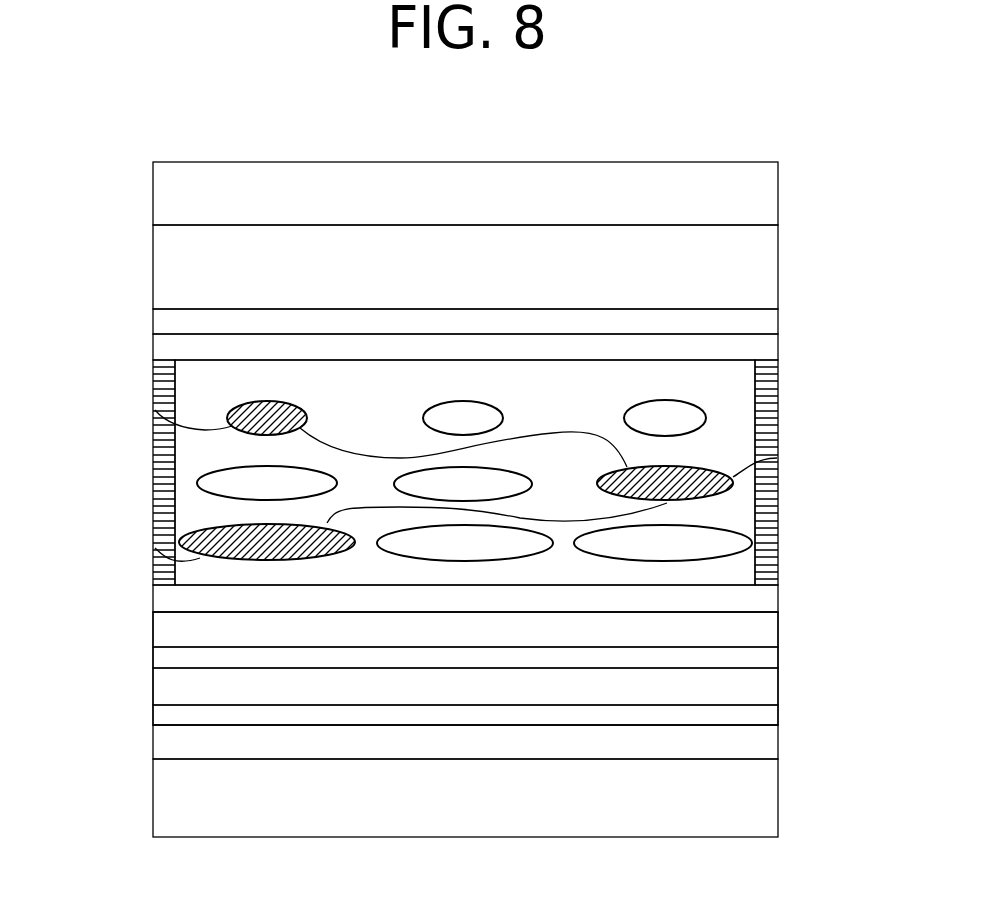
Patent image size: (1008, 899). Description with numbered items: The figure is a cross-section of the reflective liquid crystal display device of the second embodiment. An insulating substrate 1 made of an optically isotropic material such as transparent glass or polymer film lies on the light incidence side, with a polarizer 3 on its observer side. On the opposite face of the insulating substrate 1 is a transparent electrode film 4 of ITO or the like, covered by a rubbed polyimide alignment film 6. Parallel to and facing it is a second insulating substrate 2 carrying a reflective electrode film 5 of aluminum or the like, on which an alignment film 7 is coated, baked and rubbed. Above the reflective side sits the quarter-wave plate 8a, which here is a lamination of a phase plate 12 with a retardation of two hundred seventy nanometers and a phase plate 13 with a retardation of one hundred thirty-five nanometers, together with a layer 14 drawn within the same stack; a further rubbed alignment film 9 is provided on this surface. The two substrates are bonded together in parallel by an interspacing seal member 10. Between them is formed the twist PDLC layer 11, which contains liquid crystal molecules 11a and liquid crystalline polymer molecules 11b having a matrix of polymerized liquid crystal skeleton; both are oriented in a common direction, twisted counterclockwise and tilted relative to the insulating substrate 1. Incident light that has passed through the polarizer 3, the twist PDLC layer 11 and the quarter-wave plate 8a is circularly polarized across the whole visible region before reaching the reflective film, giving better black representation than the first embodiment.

The insulating substrate 1 is at (770, 265).
The insulating substrate 2 is at (770, 813).
The polarizer 3 is at (770, 197).
The transparent electrode film 4 is at (770, 322).
The reflective electrode film 5 is at (770, 750).
The alignment film 6 is at (770, 351).
The alignment film 7 is at (770, 720).
The quarter-wave plate 8a is at (870, 590).
The alignment film 9 is at (770, 598).
The seal member 10 is at (768, 503).
The twist PDLC layer 11 is at (205, 444).
The liquid crystal molecules 11a is at (230, 412).
The polymer molecules 11b is at (224, 483).
The phase plate 12 is at (770, 628).
The phase plate 13 is at (770, 688).
The light shielding layer 14 is at (770, 661).